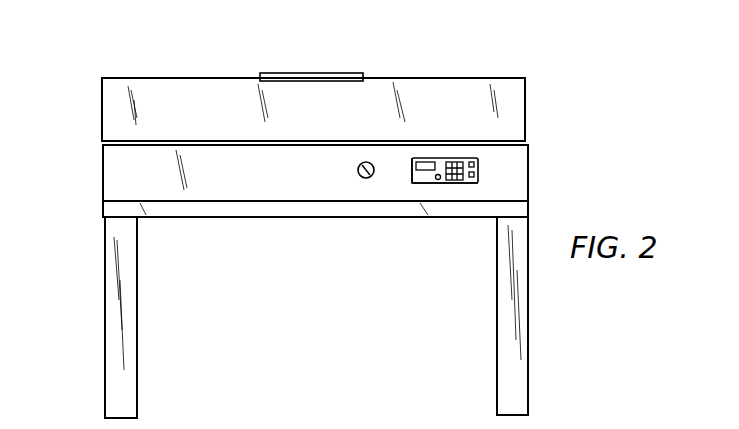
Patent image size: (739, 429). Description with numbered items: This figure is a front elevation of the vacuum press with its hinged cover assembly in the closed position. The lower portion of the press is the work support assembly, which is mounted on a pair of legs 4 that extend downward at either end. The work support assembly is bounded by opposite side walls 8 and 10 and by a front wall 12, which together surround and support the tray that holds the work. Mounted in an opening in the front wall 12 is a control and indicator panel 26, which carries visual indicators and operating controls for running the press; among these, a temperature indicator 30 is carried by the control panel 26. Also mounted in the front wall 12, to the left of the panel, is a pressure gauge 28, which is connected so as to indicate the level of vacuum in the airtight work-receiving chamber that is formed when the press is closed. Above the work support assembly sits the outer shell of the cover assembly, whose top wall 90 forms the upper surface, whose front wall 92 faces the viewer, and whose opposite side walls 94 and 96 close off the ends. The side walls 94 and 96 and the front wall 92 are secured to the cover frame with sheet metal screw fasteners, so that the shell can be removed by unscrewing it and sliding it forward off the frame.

The legs 4 is at (134, 306).
The side wall 8 is at (103, 165).
The side wall 10 is at (528, 173).
The front wall 12 is at (120, 183).
The control and indicator panel 26 is at (452, 183).
The pressure gauge 28 is at (358, 167).
The temperature indicator 30 is at (412, 167).
The top wall 90 is at (212, 78).
The front wall 92 is at (508, 93).
The side wall 94 is at (102, 105).
The side wall 96 is at (527, 106).